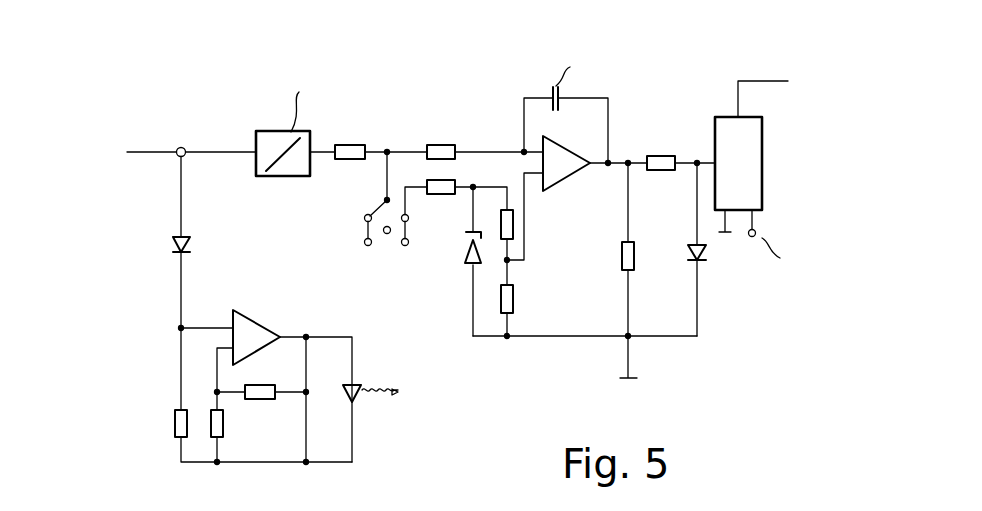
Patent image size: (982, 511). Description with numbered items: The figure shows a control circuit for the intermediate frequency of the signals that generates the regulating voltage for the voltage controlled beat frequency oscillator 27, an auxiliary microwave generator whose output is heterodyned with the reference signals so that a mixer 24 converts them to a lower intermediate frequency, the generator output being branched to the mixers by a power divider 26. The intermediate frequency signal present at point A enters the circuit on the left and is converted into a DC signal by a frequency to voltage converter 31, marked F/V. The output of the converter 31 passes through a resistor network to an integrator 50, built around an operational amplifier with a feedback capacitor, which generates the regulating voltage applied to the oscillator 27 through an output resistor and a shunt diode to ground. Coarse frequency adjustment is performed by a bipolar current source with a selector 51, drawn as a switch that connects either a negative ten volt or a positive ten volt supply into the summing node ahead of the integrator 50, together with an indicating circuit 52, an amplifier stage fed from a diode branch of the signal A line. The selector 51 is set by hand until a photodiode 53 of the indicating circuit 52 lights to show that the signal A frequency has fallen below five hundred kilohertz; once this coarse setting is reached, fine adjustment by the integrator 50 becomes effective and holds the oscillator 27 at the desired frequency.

The mixer 24 is at (176, 153).
The signal A is at (181, 146).
The frequency to voltage converter 31 is at (278, 131).
The selector 51 is at (378, 204).
The integrator 50 is at (558, 167).
The power divider 26 is at (780, 93).
The auxiliary microwave generator 27 is at (750, 188).
The indicating circuit 52 is at (243, 325).
The photodiode 53 is at (358, 402).